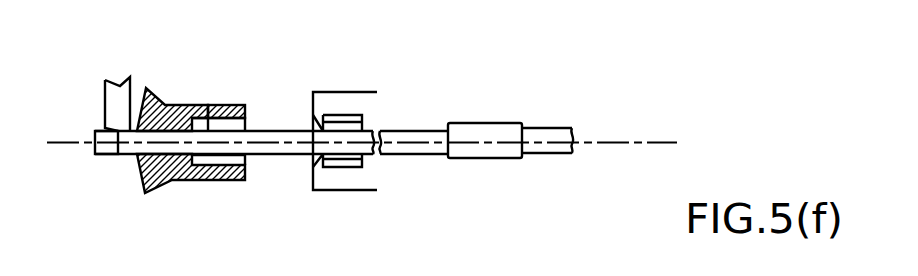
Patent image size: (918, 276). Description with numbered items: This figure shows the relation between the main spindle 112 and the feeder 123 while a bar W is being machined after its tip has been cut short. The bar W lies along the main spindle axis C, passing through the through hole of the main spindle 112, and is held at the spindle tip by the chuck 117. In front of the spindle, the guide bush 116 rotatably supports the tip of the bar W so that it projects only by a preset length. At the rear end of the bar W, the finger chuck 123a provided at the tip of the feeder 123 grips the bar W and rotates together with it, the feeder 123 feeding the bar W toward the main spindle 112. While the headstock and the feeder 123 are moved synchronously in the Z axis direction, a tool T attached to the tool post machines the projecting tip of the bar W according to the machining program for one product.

The main spindle axis C is at (74, 145).
The tool T is at (118, 136).
The bar W is at (209, 108).
The guide bush 116 is at (165, 107).
The chuck 117 is at (322, 114).
The main spindle 112 is at (350, 107).
The finger chuck 123a is at (477, 131).
The feeder 123 is at (543, 123).